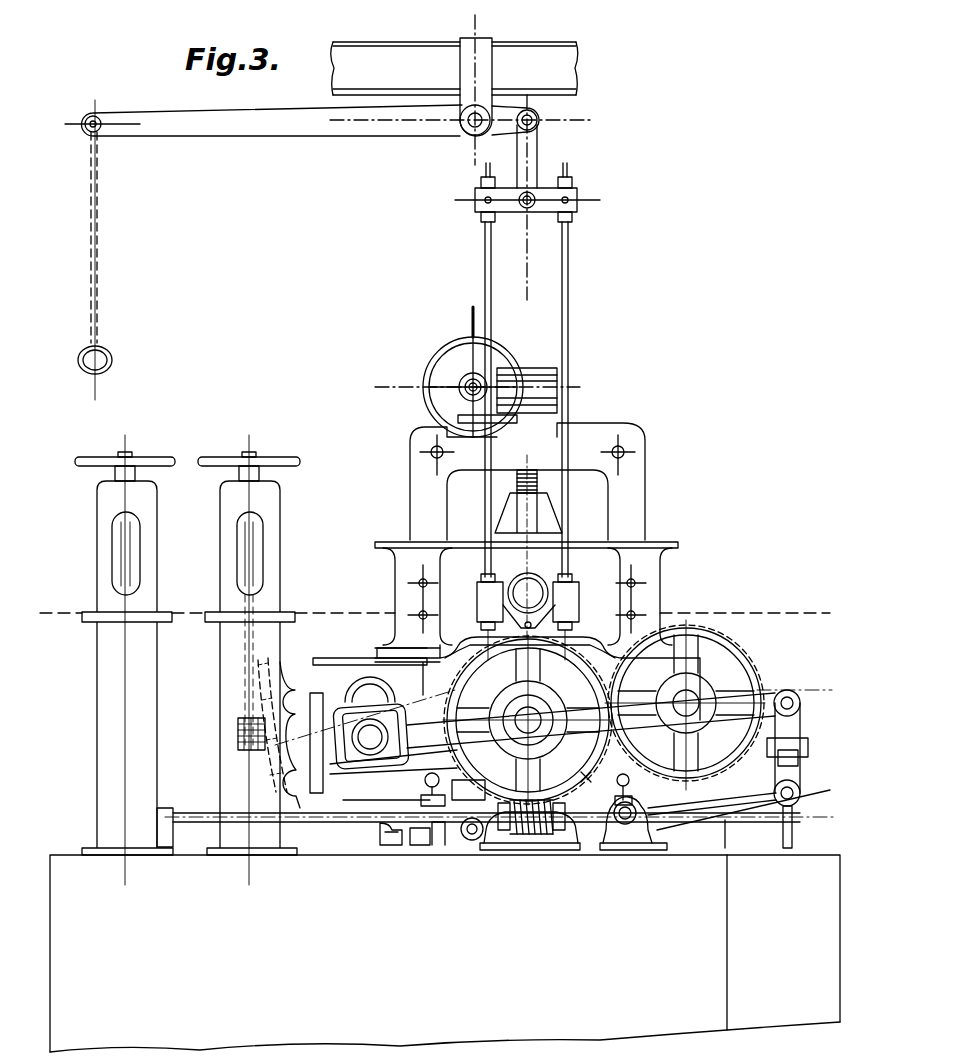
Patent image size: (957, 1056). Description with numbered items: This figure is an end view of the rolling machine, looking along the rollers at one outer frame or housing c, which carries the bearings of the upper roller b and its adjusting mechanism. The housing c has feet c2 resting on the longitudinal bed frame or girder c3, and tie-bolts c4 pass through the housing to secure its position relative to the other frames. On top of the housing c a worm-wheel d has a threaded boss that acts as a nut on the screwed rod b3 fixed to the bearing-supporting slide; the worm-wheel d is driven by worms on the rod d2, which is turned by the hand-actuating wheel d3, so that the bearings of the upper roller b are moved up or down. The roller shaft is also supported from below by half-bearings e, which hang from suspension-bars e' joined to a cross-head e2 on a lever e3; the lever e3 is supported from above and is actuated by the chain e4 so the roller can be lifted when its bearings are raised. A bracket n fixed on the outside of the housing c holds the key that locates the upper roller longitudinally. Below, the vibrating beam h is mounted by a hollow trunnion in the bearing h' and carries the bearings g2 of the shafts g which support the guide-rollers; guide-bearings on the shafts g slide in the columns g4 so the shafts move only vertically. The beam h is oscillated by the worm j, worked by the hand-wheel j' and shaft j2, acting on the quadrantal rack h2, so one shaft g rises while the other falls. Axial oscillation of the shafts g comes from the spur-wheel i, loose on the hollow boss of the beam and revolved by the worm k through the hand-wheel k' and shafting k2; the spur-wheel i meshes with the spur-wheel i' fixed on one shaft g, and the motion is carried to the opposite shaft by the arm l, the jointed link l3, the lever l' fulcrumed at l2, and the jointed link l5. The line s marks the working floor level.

The lever e3 is at (327, 128).
The chain e4 is at (90, 288).
The cross-head e2 is at (512, 205).
The suspension-bars e' is at (526, 399).
The hand-actuating wheel d3 is at (445, 351).
The rod d2 is at (466, 393).
The worm-wheel d is at (556, 386).
The tie-bolts c4 is at (430, 452).
The outer frame or housing c is at (410, 485).
The screwed rod b3 is at (530, 481).
The bracket n is at (404, 562).
The upper roller b is at (532, 590).
The half-bearings e is at (516, 617).
The hand-wheel k' is at (125, 450).
The hand-wheel j' is at (249, 450).
The shafting k2 is at (123, 548).
The shaft j2 is at (248, 547).
The quadrantal rack h2 is at (267, 678).
The worm j is at (225, 734).
The bearings g2 is at (350, 717).
The columns g4 is at (363, 672).
The shaft g is at (380, 738).
The vibrating beam h is at (525, 679).
The spur-wheel i' is at (685, 705).
The spur-wheel i is at (589, 782).
The arm l is at (794, 764).
The jointed link l3 is at (798, 720).
The lever l' is at (739, 819).
The fulcrum l2 is at (627, 820).
The jointed link l5 is at (455, 801).
The feet c2 is at (398, 822).
The bed frame or girder c3 is at (413, 847).
The worm k is at (524, 843).
The bearing h' is at (530, 848).
The floor line s is at (775, 615).